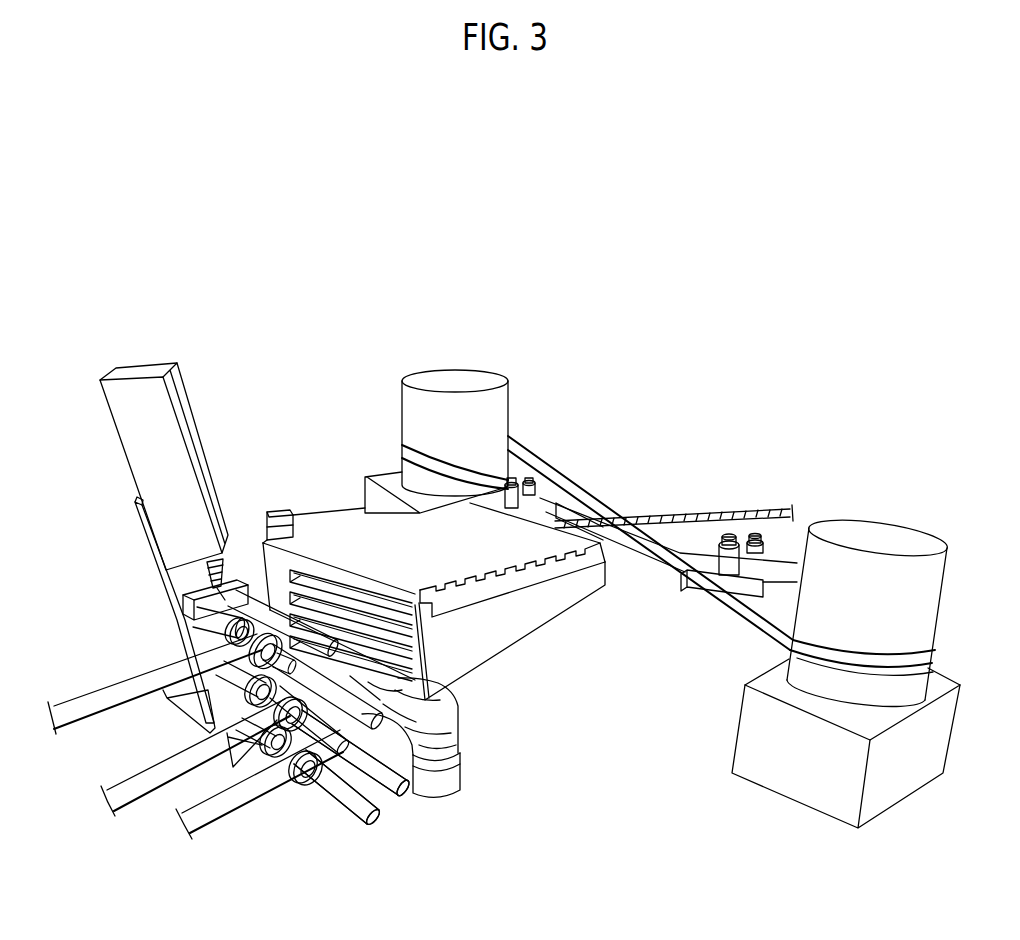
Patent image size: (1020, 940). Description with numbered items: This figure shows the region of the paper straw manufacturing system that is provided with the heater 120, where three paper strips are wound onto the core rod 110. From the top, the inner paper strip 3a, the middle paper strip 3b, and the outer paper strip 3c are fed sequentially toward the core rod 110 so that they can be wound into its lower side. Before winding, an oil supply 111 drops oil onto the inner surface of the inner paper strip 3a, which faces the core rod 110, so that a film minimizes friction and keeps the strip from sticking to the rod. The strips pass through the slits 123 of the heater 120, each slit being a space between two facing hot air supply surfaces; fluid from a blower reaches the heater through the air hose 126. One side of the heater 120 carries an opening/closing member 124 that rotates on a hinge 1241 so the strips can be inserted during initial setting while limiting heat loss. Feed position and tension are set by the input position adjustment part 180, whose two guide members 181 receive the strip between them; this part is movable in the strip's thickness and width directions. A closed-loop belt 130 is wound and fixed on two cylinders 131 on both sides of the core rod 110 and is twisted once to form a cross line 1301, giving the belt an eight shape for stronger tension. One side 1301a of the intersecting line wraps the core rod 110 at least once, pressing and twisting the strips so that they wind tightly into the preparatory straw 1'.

The oil supply 111 is at (194, 582).
The heater 120 is at (431, 559).
The slits 123 is at (322, 584).
The opening/closing member 124 is at (520, 627).
The hinge 1241 is at (563, 562).
The air hose 126 is at (462, 714).
The belt 130 is at (750, 606).
The cross line 1301 is at (627, 504).
The one side of the intersecting line 1301a is at (616, 536).
The cylinders 131 is at (422, 373).
The core rod 110 is at (757, 511).
The preparatory straw 1' is at (674, 490).
The input position adjustment part 180 is at (423, 881).
The guide members 181 is at (373, 824).
The inner paper strip 3a is at (79, 704).
The middle paper strip 3b is at (130, 795).
The outer paper strip 3c is at (230, 809).